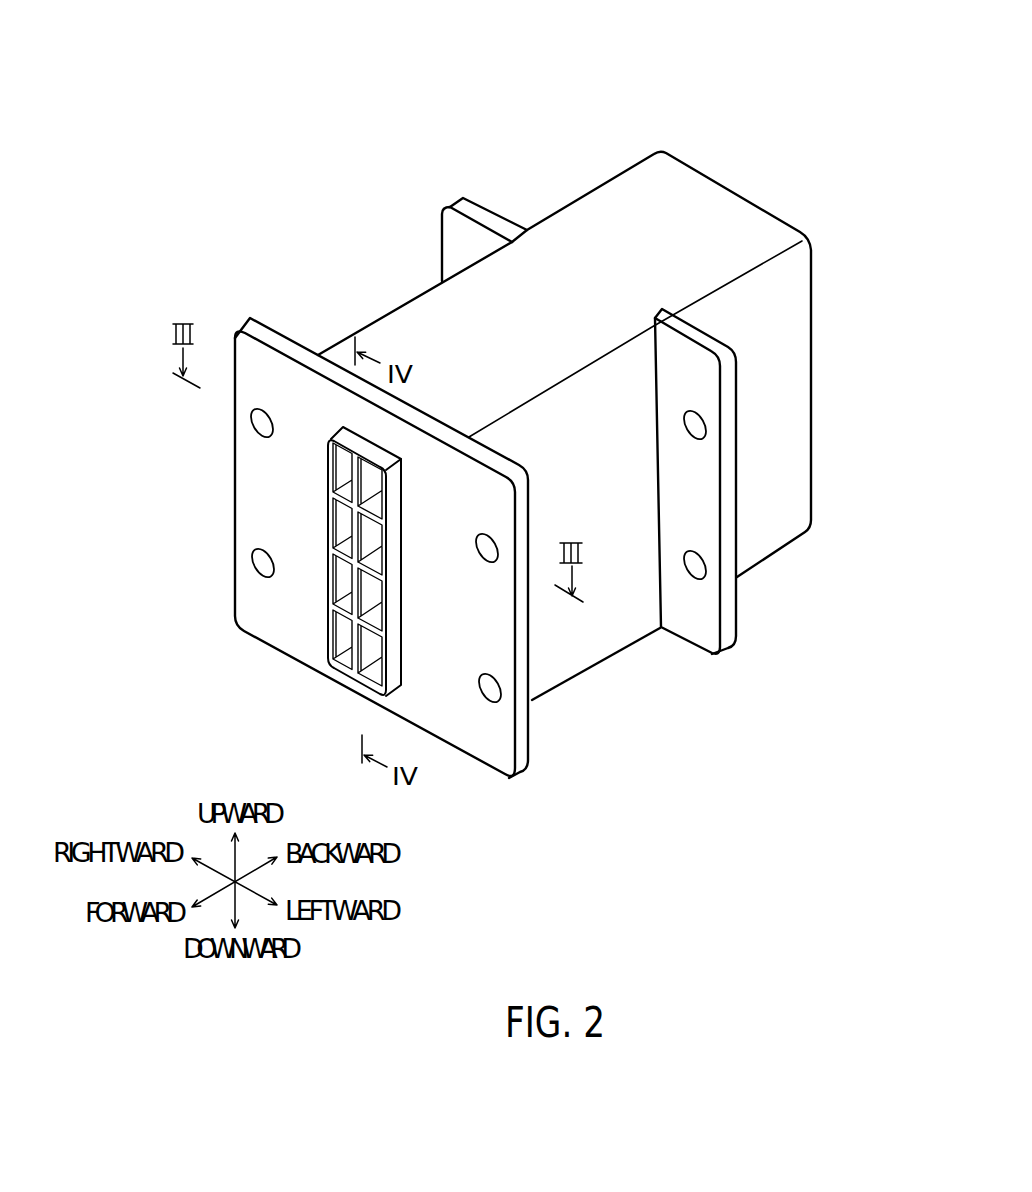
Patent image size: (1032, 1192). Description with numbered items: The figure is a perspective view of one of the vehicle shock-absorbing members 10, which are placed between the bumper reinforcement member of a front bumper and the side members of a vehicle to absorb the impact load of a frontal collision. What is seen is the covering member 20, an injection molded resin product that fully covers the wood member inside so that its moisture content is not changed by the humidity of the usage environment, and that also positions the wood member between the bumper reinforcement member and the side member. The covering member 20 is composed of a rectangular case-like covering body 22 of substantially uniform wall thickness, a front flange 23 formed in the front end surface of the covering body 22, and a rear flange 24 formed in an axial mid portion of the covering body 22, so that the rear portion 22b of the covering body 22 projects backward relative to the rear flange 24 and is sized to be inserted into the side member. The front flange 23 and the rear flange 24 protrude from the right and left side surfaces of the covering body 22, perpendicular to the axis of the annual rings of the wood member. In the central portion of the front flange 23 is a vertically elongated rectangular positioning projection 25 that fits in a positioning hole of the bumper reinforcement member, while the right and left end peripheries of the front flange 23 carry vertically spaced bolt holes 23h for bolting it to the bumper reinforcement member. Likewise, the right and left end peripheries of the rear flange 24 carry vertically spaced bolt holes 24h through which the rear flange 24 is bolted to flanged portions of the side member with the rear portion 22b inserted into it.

The vehicle shock-absorbing member 10 is at (525, 412).
The covering member 20 is at (525, 426).
The covering body 22 is at (569, 392).
The rear portion 22b is at (720, 223).
The front flange 23 is at (451, 550).
The bolt hole 23h is at (483, 679).
The rear flange 24 is at (619, 426).
The bolt hole 24h is at (704, 430).
The positioning projection 25 is at (327, 526).